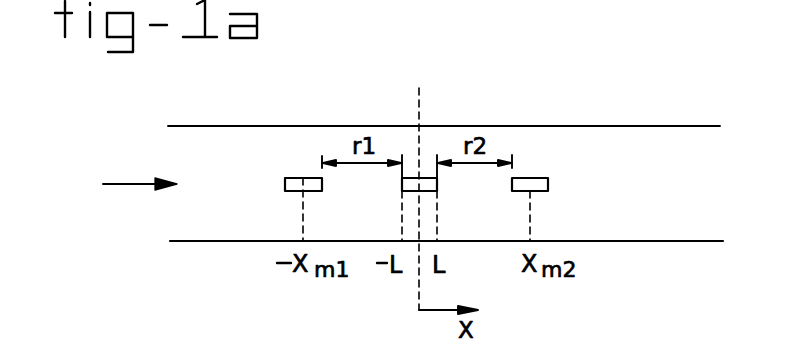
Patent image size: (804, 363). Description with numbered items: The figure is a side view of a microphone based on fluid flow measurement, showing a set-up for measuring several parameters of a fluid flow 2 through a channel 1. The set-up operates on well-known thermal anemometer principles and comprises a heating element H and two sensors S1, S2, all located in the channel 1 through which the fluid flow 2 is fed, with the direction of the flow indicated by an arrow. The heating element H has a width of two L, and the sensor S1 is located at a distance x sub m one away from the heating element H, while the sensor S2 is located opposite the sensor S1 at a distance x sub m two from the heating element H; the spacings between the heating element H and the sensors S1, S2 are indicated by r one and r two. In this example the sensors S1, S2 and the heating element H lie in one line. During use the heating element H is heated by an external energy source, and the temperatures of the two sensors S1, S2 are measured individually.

The channel 1 is at (673, 218).
The fluid flow 2 is at (137, 185).
The sensor S1 is at (301, 178).
The heating element H is at (428, 178).
The sensor S2 is at (528, 178).